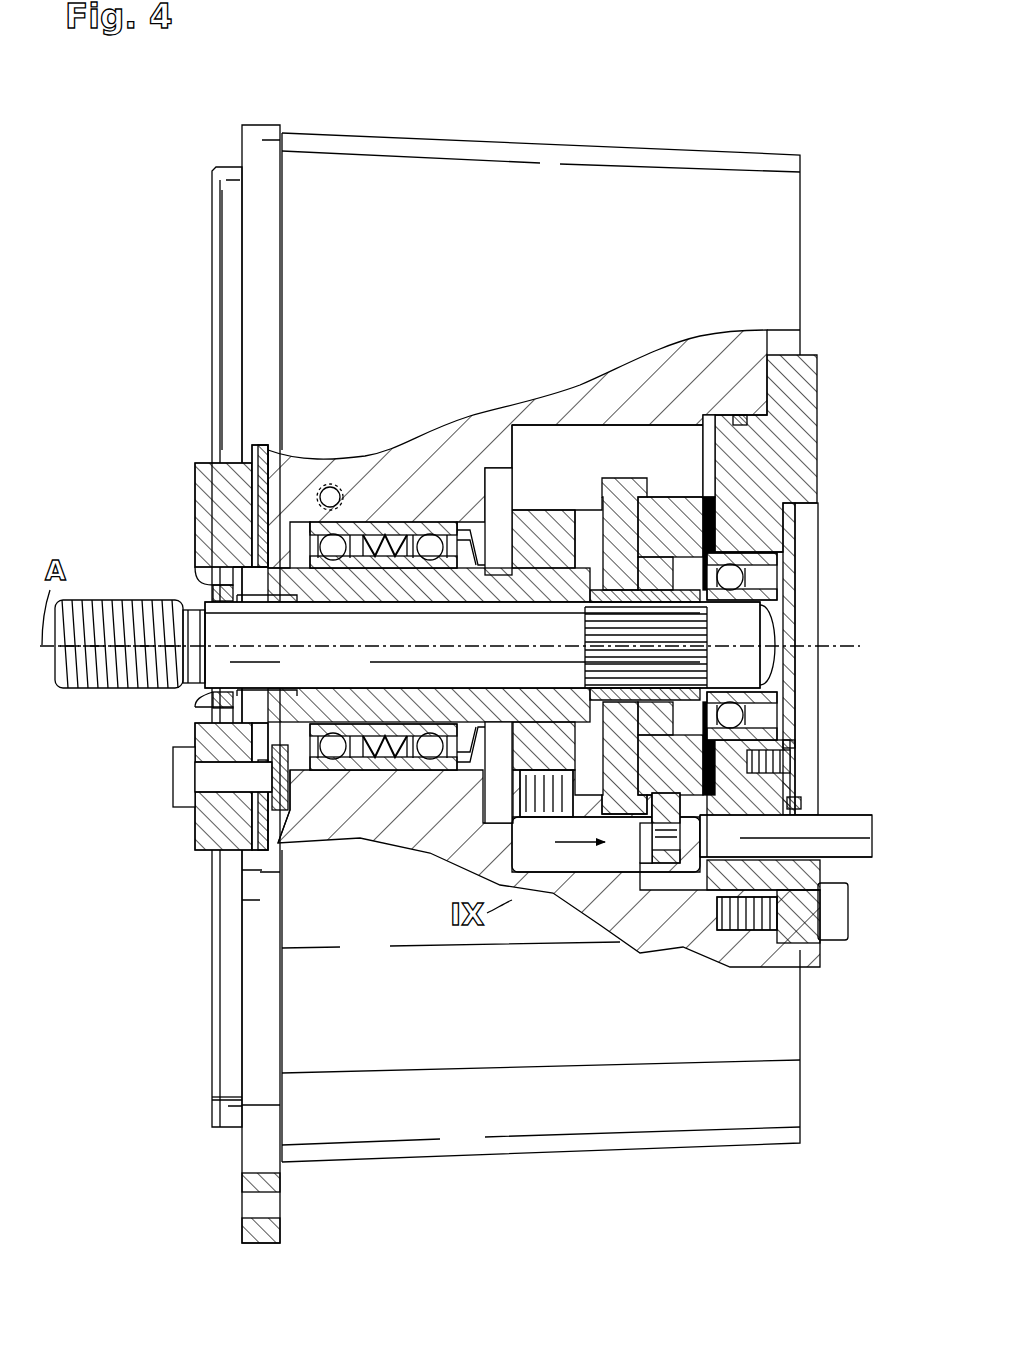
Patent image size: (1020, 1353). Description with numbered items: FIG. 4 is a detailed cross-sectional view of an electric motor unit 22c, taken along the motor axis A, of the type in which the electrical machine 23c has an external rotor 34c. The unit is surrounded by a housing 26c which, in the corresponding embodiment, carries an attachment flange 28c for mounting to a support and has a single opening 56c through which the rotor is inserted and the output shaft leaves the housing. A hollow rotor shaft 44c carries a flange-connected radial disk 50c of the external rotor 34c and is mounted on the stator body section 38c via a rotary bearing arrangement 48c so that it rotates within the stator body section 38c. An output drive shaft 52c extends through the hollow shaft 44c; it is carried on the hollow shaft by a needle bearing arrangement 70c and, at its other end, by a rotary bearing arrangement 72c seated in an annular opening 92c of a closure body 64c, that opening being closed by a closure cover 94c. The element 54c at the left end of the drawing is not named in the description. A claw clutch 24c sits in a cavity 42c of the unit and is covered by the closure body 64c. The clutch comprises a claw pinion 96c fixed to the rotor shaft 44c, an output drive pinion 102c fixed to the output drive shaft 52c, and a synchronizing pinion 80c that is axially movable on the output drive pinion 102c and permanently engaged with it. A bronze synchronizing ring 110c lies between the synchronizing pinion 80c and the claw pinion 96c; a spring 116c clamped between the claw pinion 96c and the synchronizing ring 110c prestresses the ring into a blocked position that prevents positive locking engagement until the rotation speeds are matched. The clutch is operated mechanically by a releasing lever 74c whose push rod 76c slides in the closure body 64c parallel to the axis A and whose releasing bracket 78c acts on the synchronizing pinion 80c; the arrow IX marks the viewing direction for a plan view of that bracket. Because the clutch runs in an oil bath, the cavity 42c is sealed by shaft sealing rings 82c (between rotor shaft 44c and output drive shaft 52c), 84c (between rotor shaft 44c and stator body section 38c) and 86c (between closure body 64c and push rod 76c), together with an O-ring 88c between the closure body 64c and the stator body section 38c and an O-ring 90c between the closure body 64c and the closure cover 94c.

The electric motor unit 22c is at (594, 70).
The mounting plate 23c is at (205, 222).
The claw clutch 24c is at (568, 460).
The housing 26c is at (748, 223).
The flange plate 28c is at (244, 1228).
The external rotor 34c is at (233, 316).
The stator body section 38c is at (303, 827).
The cavity 42c is at (600, 860).
The hollow rotor shaft 44c is at (248, 532).
The rotary bearing arrangement 48c is at (348, 778).
The radial disk 50c is at (230, 465).
The output drive shaft 52c is at (227, 672).
The threaded bolt 54c is at (108, 612).
The fastening region 56c is at (230, 1138).
The closure body 64c is at (795, 437).
The needle bearing arrangement 70c is at (267, 605).
The rotary bearing arrangement 72c is at (780, 578).
The releasing lever 74c is at (850, 847).
The push rod 76c is at (843, 827).
The releasing bracket 78c is at (683, 810).
The synchronizing pinion 80c is at (690, 430).
The shaft sealing ring 82c is at (201, 592).
The shaft sealing ring 84c is at (450, 462).
The shaft sealing ring 86c is at (800, 795).
The O-ring 88c is at (737, 416).
The O-ring 90c is at (770, 727).
The annular opening 92c is at (808, 622).
The closure cover 94c is at (790, 537).
The claw pinion 96c is at (497, 424).
The output drive pinion 102c is at (713, 540).
The synchronizing ring 110c is at (620, 490).
The spring 116c is at (634, 790).